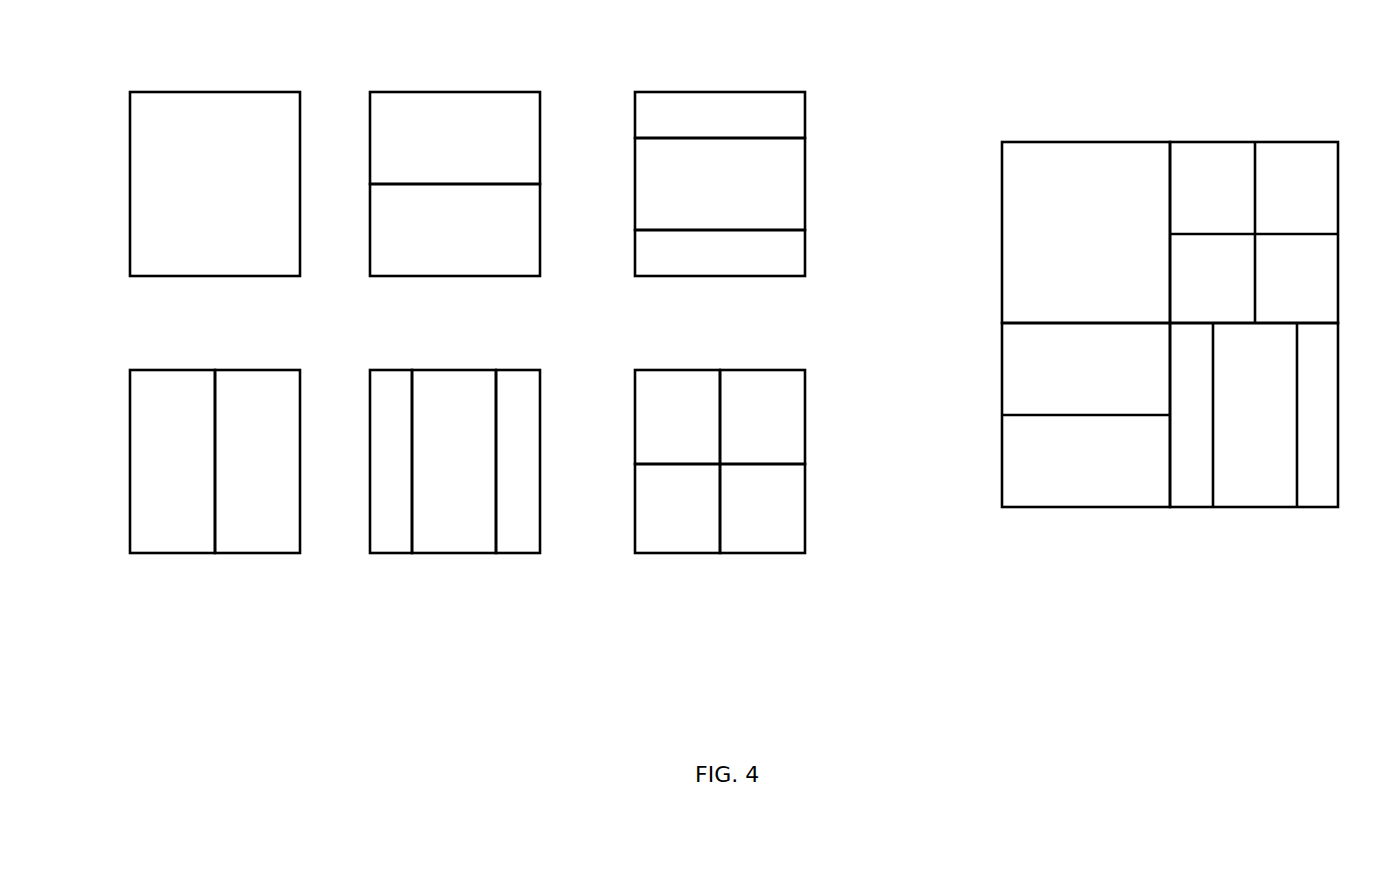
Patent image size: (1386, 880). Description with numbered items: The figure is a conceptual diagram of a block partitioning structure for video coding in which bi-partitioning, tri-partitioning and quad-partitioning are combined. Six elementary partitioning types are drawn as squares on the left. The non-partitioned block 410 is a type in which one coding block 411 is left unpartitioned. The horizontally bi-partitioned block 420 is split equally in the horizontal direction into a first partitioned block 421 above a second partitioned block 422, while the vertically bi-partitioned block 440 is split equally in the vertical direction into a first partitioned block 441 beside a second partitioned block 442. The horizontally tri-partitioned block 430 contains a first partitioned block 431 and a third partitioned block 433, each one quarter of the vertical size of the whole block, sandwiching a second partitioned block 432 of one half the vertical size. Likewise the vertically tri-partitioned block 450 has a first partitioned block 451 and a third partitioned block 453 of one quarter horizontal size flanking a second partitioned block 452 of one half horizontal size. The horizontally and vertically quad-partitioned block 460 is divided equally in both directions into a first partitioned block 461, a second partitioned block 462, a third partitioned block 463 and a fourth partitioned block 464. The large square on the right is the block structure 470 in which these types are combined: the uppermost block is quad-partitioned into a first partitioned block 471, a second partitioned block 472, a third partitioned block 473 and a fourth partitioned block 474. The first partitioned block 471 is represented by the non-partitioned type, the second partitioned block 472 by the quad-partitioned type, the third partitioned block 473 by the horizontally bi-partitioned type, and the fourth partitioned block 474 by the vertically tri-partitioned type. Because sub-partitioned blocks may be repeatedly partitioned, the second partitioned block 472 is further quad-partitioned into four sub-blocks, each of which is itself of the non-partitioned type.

The non-partitioned block 410 is at (198, 158).
The full region 411 is at (215, 92).
The horizontally bi-partitioned block 420 is at (464, 158).
The first partitioned block 421 is at (540, 135).
The second partitioned block 422 is at (540, 228).
The horizontally tri-partitioned block 430 is at (729, 158).
The first partitioned block 431 is at (805, 108).
The second partitioned block 432 is at (805, 175).
The third partitioned block 433 is at (805, 245).
The vertically bi-partitioned block 440 is at (201, 435).
The first partitioned block 441 is at (168, 370).
The second partitioned block 442 is at (255, 370).
The vertically tri-partitioned block 450 is at (438, 469).
The first partitioned block 451 is at (393, 553).
The second partitioned block 452 is at (455, 370).
The third partitioned block 453 is at (520, 553).
The horizontally and vertically quad-partitioned block 460 is at (707, 469).
The first partitioned block 461 is at (676, 370).
The second partitioned block 462 is at (760, 370).
The third partitioned block 463 is at (685, 553).
The fourth partitioned block 464 is at (768, 553).
The block structure 470 is at (1153, 332).
The first partitioned block 471 is at (1085, 142).
The second partitioned block 472 is at (1255, 142).
The third partitioned block 473 is at (1090, 507).
The fourth partitioned block 474 is at (1258, 507).